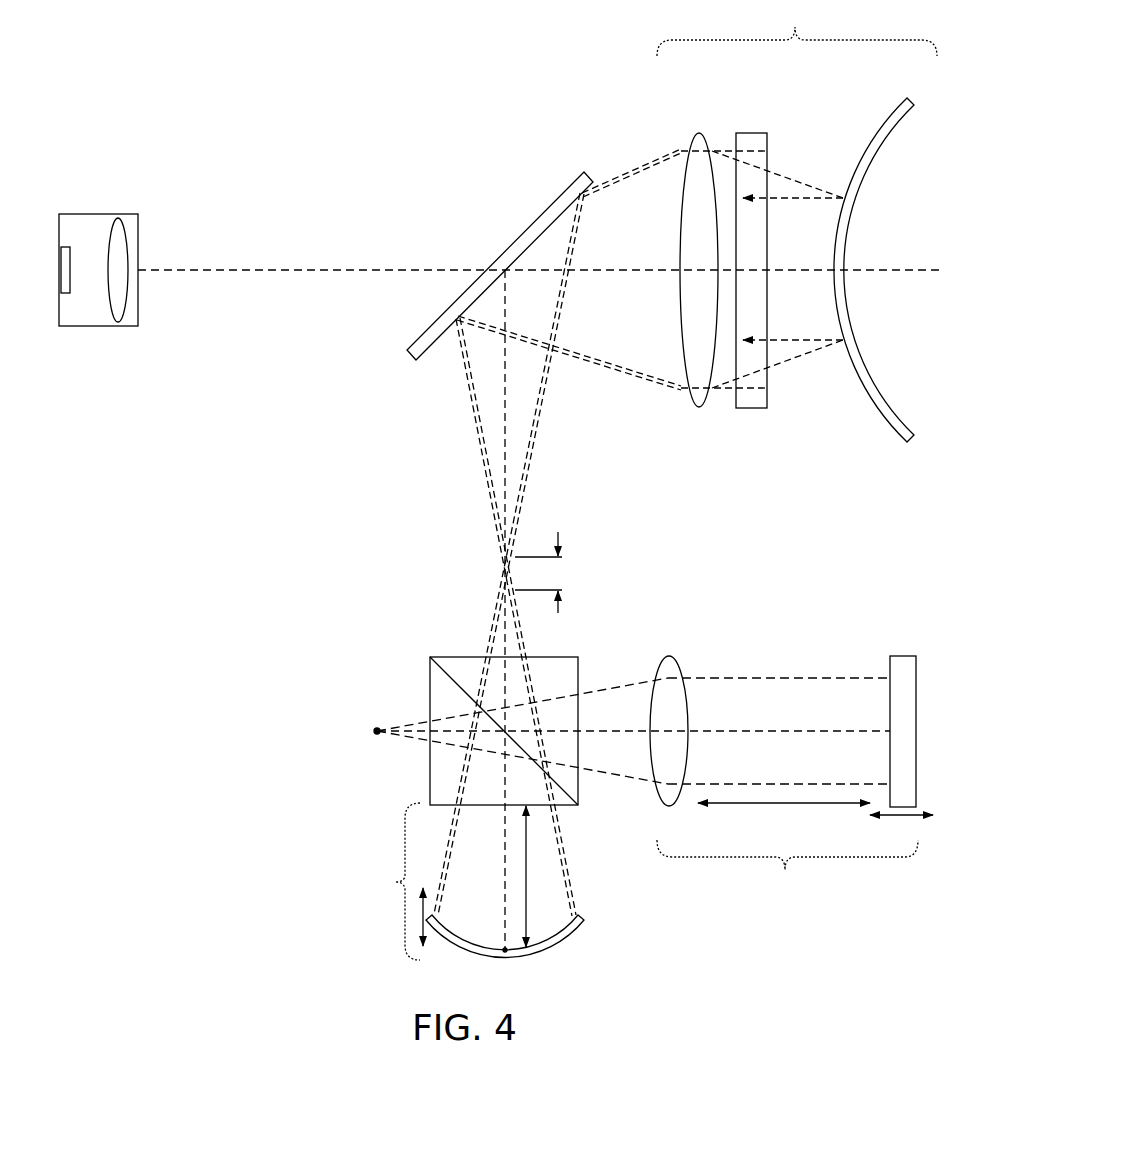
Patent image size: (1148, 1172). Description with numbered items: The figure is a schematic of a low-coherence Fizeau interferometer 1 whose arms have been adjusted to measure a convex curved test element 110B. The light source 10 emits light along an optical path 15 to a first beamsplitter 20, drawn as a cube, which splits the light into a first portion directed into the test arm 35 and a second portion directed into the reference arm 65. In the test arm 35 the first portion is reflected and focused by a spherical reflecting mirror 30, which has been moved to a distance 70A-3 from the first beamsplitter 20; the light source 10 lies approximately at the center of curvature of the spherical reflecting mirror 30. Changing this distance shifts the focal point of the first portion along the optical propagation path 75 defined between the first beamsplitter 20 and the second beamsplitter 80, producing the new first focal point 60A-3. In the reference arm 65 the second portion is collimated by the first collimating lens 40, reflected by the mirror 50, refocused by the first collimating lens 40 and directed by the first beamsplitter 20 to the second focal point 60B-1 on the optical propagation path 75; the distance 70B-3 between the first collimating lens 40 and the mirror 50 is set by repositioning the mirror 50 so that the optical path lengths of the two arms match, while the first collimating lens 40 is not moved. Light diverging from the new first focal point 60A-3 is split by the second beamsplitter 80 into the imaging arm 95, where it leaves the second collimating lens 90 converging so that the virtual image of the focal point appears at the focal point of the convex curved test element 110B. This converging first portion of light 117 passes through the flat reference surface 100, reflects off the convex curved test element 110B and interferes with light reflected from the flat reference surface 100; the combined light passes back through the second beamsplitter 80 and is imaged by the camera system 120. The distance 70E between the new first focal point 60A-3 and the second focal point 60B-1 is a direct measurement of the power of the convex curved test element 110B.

The interferometer 1 is at (317, 105).
The light source 10 is at (375, 729).
The optical path 15 is at (597, 730).
The first beamsplitter 20 is at (428, 774).
The spherical reflecting mirror 30 is at (567, 935).
The test arm 35 is at (395, 882).
The first collimating lens 40 is at (668, 657).
The mirror 50 is at (900, 656).
The new first focal point 60A-3 is at (495, 591).
The second focal point 60B-1 is at (497, 567).
The reference arm 65 is at (787, 871).
The distance 70A-3 is at (528, 860).
The distance 70B-3 is at (745, 805).
The distance 70E is at (560, 575).
The optical propagation path 75 is at (505, 420).
The second beamsplitter 80 is at (535, 222).
The second collimating lens 90 is at (690, 134).
The imaging arm 95 is at (797, 29).
The flat reference surface 100 is at (750, 133).
The convex curved test element 110B is at (915, 95).
The converging first portion of light 117 is at (786, 156).
The camera system 120 is at (105, 210).